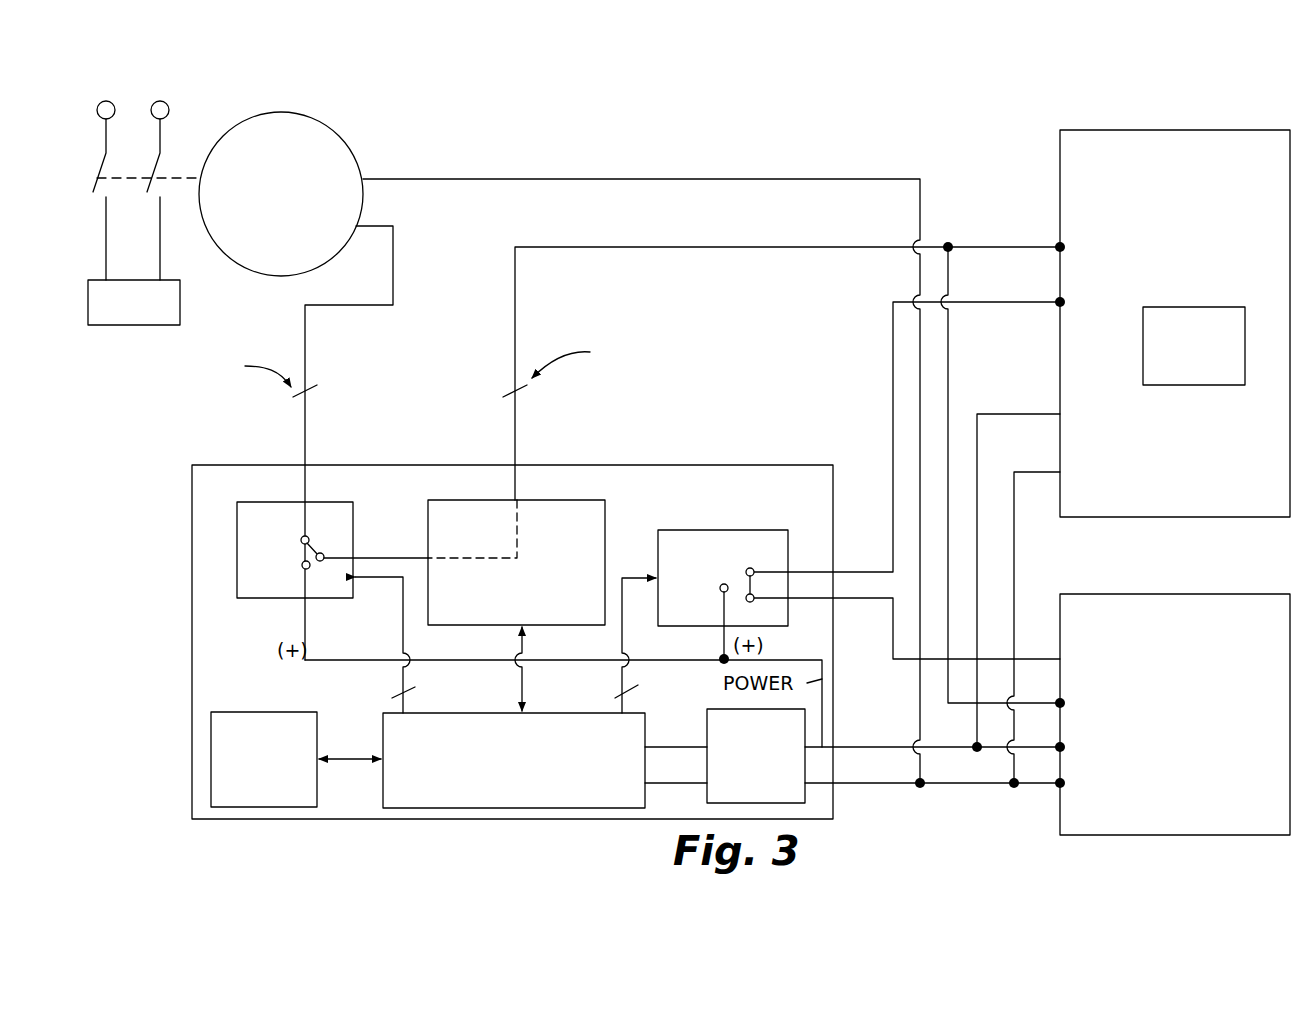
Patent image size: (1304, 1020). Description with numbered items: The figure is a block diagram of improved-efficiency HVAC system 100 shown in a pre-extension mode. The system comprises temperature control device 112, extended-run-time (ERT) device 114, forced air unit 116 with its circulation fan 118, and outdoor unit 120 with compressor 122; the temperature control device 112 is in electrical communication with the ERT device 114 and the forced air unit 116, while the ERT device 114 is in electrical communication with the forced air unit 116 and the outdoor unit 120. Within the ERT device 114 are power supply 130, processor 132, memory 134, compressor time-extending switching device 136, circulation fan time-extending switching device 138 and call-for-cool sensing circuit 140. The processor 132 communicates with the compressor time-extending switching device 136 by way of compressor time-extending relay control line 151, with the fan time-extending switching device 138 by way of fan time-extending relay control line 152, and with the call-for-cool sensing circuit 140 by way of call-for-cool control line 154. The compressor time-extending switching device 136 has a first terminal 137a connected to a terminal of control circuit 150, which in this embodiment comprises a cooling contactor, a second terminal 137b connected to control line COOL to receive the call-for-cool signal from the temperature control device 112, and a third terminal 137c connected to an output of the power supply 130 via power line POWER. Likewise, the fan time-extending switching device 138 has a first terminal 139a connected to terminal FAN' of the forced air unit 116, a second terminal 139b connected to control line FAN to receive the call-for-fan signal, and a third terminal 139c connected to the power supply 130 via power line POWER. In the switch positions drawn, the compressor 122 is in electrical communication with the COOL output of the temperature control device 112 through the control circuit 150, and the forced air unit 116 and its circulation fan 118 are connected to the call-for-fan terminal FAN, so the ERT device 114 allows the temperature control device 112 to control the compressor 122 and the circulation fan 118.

The improved-efficiency HVAC system 100 is at (982, 120).
The temperature control device 112 is at (1175, 714).
The extended-run-time (ERT) device 114 is at (192, 677).
The forced air unit (FAU) 116 is at (1175, 323).
The circulation fan 118 is at (1194, 346).
The outdoor unit 120 is at (192, 98).
The compressor 122 is at (181, 300).
The power supply 130 is at (725, 756).
The processor 132 is at (514, 760).
The memory 134 is at (296, 759).
The compressor time-extending switching device 136 is at (237, 567).
The first terminal 137a is at (310, 537).
The second terminal 137b is at (323, 554).
The third terminal 137c is at (302, 566).
The circulation fan time-extending switching device 138 is at (700, 530).
The first terminal 139a is at (746, 573).
The second terminal 139b is at (756, 601).
The third terminal 139c is at (720, 588).
The call-for-cool sensing circuit 140 is at (467, 500).
The control circuit 150 is at (345, 126).
The compressor time-extending relay control line 151 is at (391, 692).
The fan time-extending relay control line 152 is at (616, 694).
The call-for-cool control line 154 is at (513, 695).